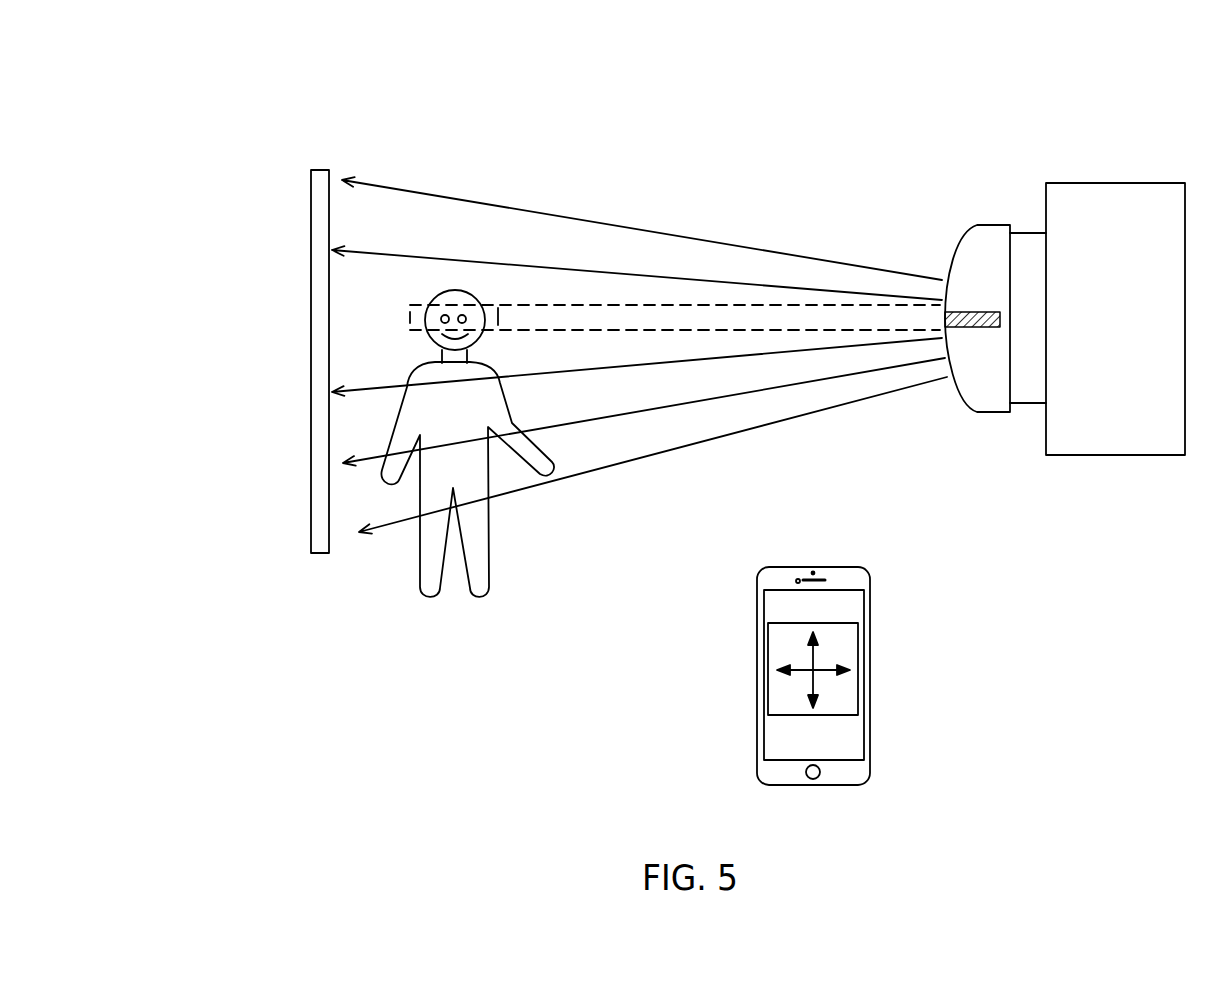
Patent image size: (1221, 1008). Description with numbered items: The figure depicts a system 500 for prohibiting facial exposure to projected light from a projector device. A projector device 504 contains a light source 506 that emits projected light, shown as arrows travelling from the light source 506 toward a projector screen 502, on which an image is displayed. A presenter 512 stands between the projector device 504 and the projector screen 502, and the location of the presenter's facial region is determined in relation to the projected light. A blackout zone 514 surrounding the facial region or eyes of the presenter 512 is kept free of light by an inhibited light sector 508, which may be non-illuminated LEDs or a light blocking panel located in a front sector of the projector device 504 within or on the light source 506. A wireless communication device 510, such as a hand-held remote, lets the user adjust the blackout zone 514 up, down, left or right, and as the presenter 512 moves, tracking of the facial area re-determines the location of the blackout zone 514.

The system 500 is at (266, 101).
The projector screen 502 is at (311, 292).
The projector device 504 is at (1133, 183).
The light source 506 is at (992, 225).
The inhibited light sector 508 is at (970, 328).
The wireless communication device 510 is at (877, 618).
The presenter 512 is at (467, 443).
The blackout zone 514 is at (420, 302).